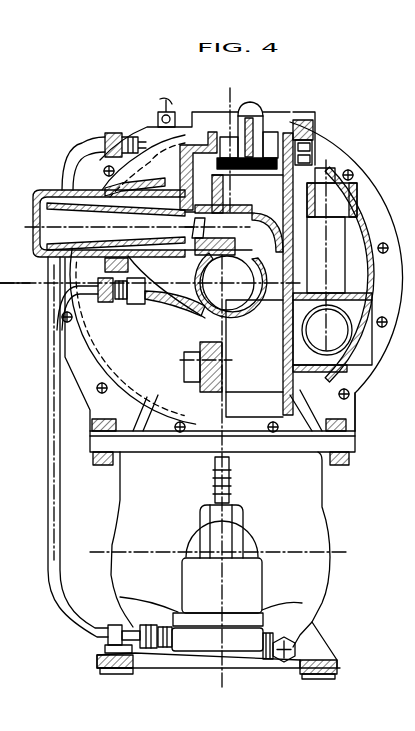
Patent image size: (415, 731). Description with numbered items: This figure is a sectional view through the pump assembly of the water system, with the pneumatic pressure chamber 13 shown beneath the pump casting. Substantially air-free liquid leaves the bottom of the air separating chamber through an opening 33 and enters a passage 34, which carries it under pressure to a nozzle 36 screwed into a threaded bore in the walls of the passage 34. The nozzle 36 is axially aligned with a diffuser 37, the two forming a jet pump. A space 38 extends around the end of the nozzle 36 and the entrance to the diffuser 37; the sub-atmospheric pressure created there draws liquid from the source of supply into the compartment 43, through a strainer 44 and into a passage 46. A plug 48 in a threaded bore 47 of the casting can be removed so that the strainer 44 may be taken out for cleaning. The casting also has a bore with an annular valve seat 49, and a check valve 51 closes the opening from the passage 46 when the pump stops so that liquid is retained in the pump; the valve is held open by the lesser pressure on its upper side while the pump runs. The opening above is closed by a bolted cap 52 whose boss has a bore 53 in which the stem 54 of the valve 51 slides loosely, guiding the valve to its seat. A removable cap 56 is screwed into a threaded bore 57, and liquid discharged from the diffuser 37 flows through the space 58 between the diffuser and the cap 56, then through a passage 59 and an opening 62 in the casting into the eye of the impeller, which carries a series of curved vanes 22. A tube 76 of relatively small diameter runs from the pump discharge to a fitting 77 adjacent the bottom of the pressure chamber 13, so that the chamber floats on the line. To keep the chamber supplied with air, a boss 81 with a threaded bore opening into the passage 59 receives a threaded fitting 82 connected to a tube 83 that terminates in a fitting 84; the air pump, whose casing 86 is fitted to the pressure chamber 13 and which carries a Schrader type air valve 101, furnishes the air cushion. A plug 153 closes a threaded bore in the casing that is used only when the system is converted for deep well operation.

The pneumatic pressure chamber 13 is at (218, 565).
The curved vanes 22 is at (15, 291).
The opening 33 is at (254, 404).
The passage 34 is at (254, 346).
The nozzle 36 is at (198, 246).
The diffuser 37 is at (68, 158).
The space 38 is at (198, 171).
The compartment 43 is at (332, 336).
The strainer 44 is at (331, 258).
The passage 46 is at (239, 194).
The threaded bore 47 is at (356, 200).
The plug 48 is at (318, 182).
The annular valve seat 49 is at (305, 166).
The check valve 51 is at (300, 120).
The cap 52 is at (250, 103).
The bore 53 is at (235, 157).
The stem 54 is at (258, 116).
The removable cap 56 is at (50, 192).
The threaded bore 57 is at (128, 267).
The space 58 is at (80, 190).
The passage 59 is at (197, 285).
The opening 62 is at (227, 283).
The tube 76 is at (85, 150).
The fitting 77 is at (143, 673).
The boss 81 is at (142, 298).
The threaded fitting 82 is at (121, 300).
The tube 83 is at (48, 486).
The fitting 84 is at (165, 673).
The casing 86 is at (248, 583).
The Schrader type air valve 101 is at (236, 486).
The plug 153 is at (183, 358).